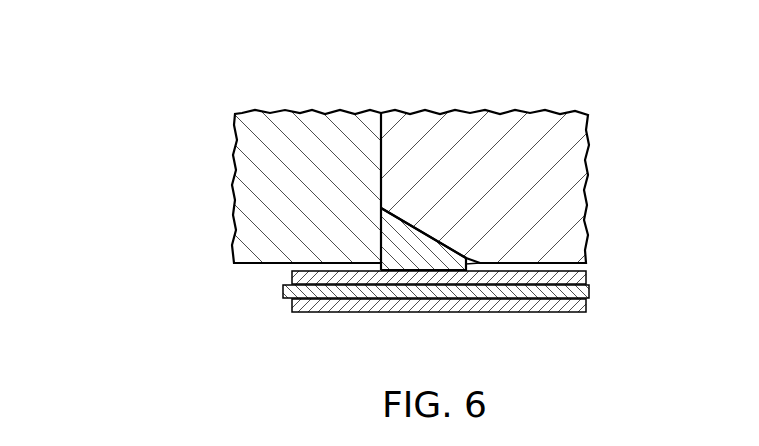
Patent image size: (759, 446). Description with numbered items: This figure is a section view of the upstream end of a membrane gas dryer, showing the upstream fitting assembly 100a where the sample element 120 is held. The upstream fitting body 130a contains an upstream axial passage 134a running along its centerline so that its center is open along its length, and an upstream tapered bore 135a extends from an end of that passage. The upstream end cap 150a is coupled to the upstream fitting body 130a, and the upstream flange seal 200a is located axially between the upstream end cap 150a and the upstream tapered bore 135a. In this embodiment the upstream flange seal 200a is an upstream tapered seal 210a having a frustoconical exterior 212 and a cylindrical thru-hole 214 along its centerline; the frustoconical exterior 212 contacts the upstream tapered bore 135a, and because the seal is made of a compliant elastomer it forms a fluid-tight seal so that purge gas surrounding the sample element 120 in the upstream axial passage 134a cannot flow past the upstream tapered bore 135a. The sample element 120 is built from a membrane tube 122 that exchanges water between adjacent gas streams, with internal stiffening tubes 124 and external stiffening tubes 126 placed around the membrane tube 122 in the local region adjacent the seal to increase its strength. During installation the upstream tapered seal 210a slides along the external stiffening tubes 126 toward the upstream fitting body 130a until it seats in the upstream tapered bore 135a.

The upstream fitting assembly 100a is at (528, 88).
The upstream end cap 150a is at (226, 160).
The upstream fitting body 130a is at (593, 175).
The upstream tapered seal 210a is at (454, 239).
The frustoconical exterior 212 is at (415, 213).
The upstream tapered bore 135a is at (466, 259).
The upstream axial passage 134a is at (560, 263).
The external stiffening tubes 126 is at (292, 278).
The membrane tube 122 is at (283, 292).
The internal stiffening tubes 124 is at (457, 313).
The sample element 120 is at (466, 316).
The upstream flange seal 200a is at (376, 271).
The cylindrical thru-hole 214 is at (412, 272).